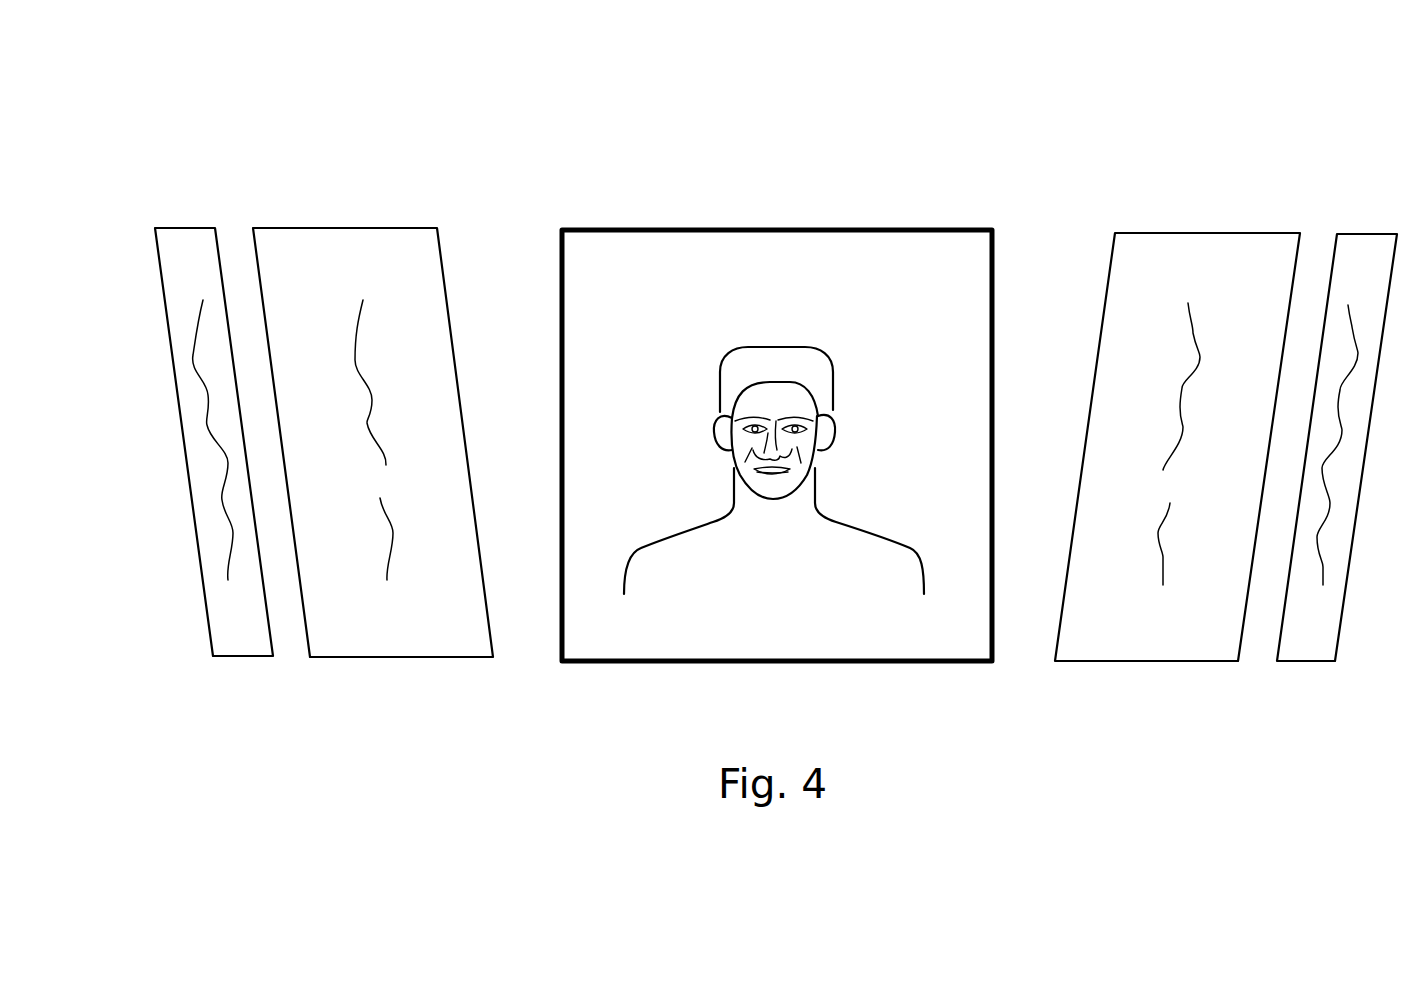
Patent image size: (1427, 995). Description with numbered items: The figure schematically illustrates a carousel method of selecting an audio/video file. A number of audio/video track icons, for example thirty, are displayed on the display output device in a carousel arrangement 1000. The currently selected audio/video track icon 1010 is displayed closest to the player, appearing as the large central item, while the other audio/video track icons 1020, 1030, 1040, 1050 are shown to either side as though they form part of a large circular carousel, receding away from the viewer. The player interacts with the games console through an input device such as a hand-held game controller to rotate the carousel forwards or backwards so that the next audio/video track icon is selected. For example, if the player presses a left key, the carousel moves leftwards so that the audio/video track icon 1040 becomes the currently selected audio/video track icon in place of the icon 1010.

The carousel arrangement 1000 is at (629, 124).
The currently selected audio/video track icon 1010 is at (778, 230).
The audio/video track icon 1020 is at (188, 228).
The audio/video track icon 1030 is at (348, 228).
The audio/video track icon 1040 is at (1210, 233).
The audio/video track icon 1050 is at (1370, 234).